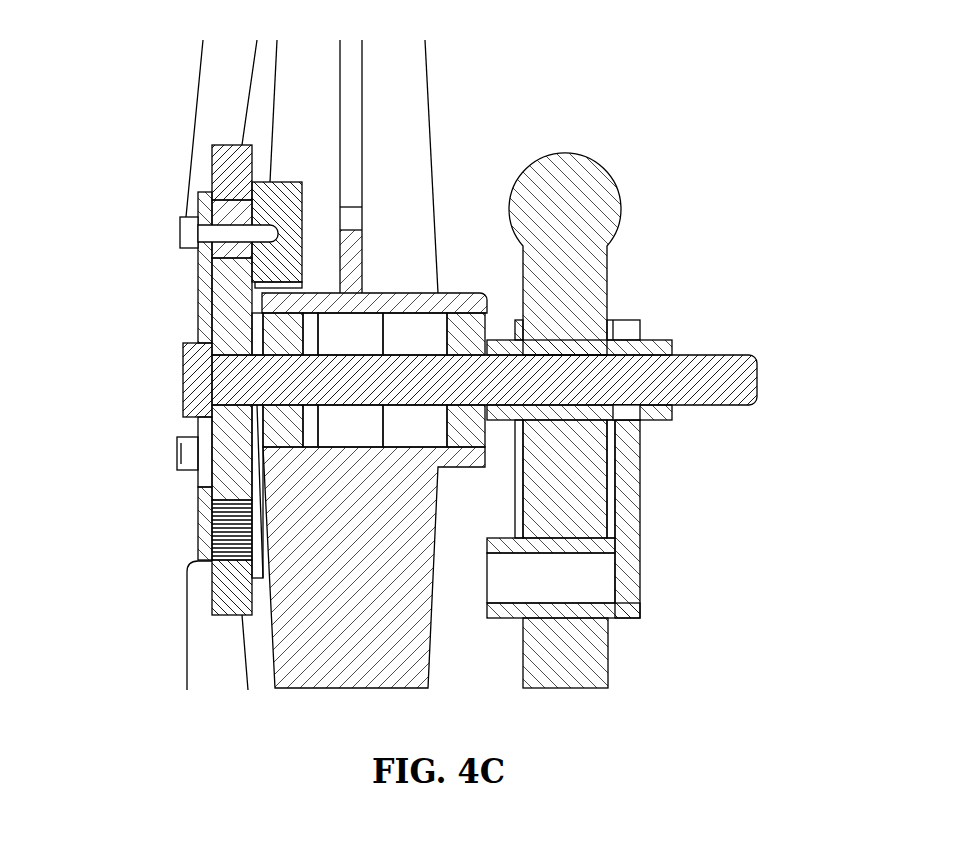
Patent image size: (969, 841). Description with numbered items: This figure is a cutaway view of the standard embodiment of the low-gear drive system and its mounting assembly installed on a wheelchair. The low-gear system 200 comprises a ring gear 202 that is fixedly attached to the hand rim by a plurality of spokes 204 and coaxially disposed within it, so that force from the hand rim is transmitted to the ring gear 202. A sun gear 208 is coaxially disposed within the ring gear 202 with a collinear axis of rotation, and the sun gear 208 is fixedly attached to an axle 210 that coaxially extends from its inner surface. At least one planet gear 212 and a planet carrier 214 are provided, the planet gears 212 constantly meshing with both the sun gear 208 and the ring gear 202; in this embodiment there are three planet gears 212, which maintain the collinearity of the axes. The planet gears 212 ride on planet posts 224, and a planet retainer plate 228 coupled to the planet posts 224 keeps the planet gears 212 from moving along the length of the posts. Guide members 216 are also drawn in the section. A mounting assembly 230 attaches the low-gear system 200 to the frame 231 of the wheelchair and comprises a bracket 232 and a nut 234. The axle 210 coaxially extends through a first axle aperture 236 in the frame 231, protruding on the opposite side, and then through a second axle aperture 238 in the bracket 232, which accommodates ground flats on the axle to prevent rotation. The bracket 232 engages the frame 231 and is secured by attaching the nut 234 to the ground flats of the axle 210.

The low-gear system 200 is at (128, 372).
The ring gear 202 is at (233, 185).
The spokes 204 is at (228, 92).
The sun gear 208 is at (237, 323).
The axle 210 is at (203, 377).
The planet gear 212 is at (237, 215).
The planet carrier 214 is at (292, 200).
The guide rods 216 is at (317, 90).
The planet posts 224 is at (228, 232).
The planet retainer plate 228 is at (207, 500).
The mounting assembly 230 is at (702, 198).
The frame 231 is at (563, 438).
The bracket 232 is at (635, 530).
The nut 234 is at (665, 412).
The first axle aperture 236 is at (540, 333).
The second axle aperture 238 is at (628, 410).